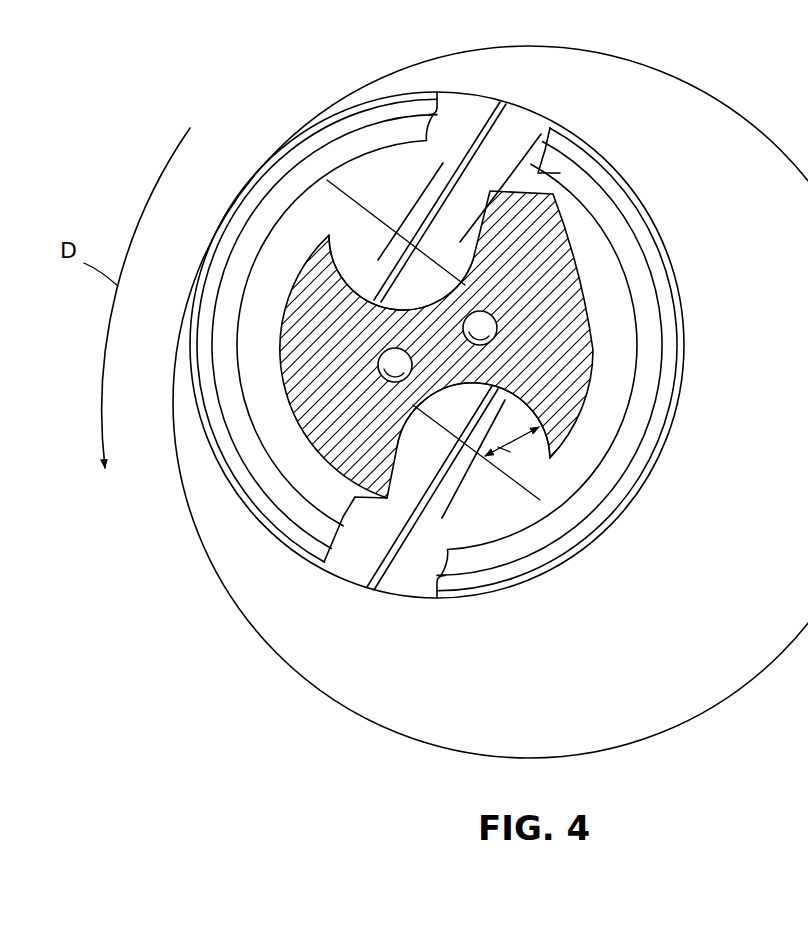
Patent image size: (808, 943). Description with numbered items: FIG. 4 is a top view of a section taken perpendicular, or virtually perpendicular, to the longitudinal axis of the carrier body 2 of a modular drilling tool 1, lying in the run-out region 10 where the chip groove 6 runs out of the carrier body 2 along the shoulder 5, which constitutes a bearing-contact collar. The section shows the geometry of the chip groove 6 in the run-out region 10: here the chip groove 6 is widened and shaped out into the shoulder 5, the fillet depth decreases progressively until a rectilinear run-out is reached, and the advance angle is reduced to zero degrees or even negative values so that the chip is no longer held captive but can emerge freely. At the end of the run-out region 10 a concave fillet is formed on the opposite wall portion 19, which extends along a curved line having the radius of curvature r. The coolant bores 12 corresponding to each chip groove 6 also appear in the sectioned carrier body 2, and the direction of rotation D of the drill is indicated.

The modular drilling tool 1 is at (692, 133).
The carrier body 2 is at (578, 458).
The shoulder 5 is at (684, 273).
The chip groove 6 is at (490, 188).
The run-out region 10 is at (362, 170).
The coolant bore 12 is at (466, 322).
The wall portion 19 is at (330, 226).